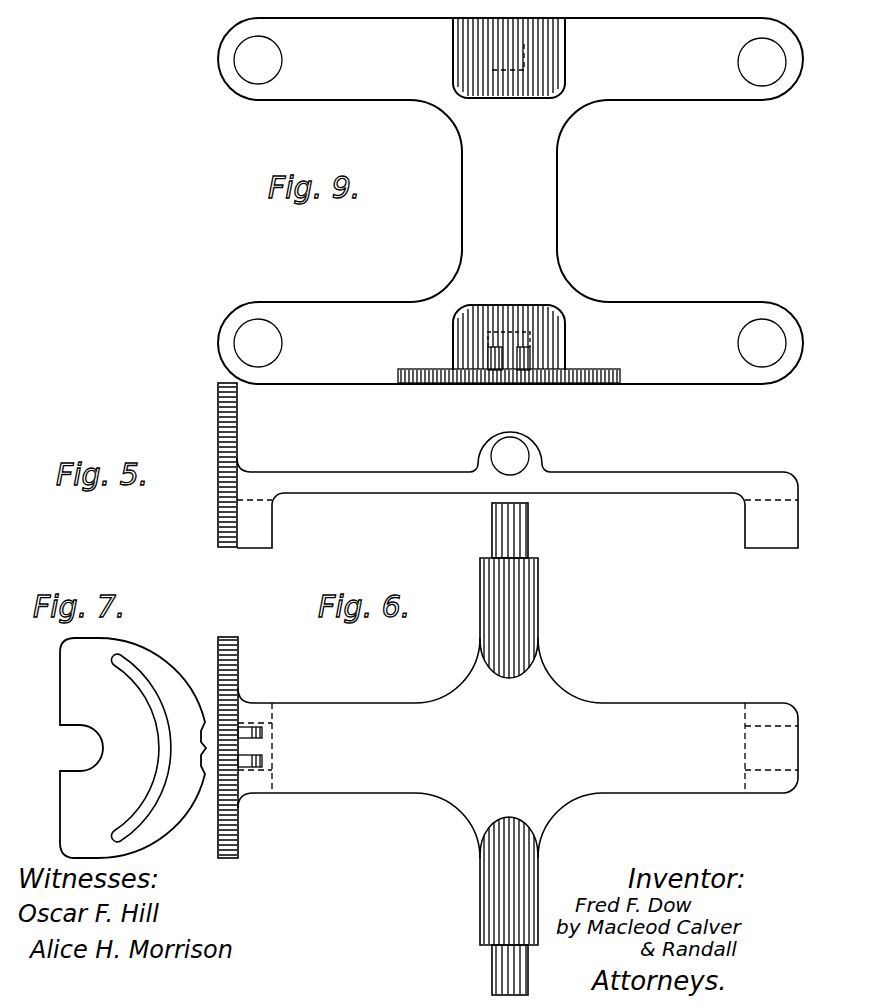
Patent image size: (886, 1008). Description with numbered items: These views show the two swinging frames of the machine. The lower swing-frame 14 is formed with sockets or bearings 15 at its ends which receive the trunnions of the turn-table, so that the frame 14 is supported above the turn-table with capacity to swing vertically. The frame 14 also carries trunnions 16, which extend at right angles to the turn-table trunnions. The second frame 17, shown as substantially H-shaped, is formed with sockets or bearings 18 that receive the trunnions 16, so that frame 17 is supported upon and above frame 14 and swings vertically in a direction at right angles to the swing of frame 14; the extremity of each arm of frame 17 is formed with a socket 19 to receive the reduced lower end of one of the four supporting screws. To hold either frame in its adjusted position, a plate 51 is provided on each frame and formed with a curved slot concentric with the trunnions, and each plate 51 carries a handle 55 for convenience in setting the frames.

In FIG. 5, the frame 14 is at (638, 482).
In FIG. 6, the frame 14 is at (650, 716).
In FIG. 5, the sockets or bearings 15 is at (262, 520).
In FIG. 6, the sockets or bearings 15 is at (268, 742).
In FIG. 5, the trunnions 16 is at (516, 452).
In FIG. 6, the trunnions 16 is at (523, 541).
In FIG. 9, the second frame 17 is at (510, 201).
In FIG. 9, the sockets or bearings 18 is at (522, 52).
In FIG. 9, the socket 19 is at (247, 62).
In FIG. 5, the plate 51 is at (220, 435).
In FIG. 7, the plate 51 is at (75, 805).
In FIG. 5, the handle 55 is at (516, 386).
In FIG. 7, the handle 55 is at (220, 725).